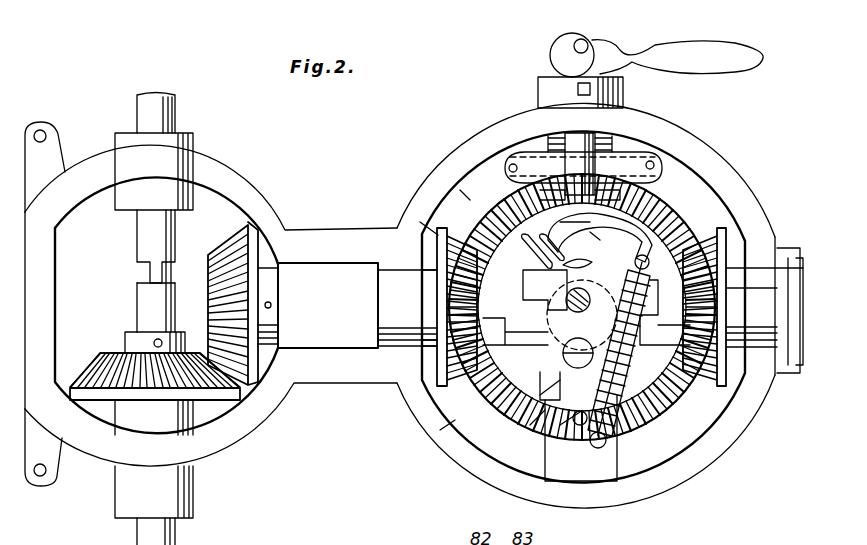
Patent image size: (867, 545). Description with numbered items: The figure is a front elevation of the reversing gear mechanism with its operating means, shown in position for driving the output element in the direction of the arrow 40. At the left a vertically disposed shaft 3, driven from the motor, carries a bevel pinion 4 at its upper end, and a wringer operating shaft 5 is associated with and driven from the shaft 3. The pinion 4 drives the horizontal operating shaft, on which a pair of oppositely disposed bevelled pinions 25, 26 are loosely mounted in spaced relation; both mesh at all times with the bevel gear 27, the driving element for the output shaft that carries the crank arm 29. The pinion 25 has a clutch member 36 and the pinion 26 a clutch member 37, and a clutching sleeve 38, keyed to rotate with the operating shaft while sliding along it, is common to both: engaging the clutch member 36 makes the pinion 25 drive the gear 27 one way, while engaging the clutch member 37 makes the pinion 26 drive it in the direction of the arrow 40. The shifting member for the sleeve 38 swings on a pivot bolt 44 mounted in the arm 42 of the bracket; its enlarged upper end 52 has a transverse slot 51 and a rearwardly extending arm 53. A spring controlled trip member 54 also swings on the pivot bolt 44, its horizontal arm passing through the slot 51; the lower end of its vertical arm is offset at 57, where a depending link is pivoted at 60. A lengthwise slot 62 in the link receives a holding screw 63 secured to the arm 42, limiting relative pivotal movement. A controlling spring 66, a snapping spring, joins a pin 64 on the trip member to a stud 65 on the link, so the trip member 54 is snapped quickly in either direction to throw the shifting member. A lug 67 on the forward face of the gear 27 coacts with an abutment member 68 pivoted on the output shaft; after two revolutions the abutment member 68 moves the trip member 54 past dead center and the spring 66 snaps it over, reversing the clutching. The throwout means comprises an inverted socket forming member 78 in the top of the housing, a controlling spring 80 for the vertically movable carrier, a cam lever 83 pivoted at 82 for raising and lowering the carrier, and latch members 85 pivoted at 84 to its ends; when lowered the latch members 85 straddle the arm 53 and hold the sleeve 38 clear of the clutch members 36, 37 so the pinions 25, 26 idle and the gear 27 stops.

The vertically disposed shaft 3 is at (145, 290).
The bevel pinion 4 is at (100, 355).
The wringer operating shaft 5 is at (147, 235).
The bevelled pinion 25 is at (438, 232).
The bevelled pinion 26 is at (722, 236).
The bevel gear 27 is at (455, 420).
The crank arm 29 is at (453, 305).
The clutch member 36 is at (560, 362).
The clutch member 37 is at (660, 345).
The clutching sleeve 38 is at (556, 325).
The arrow 40 is at (470, 198).
The arm 42 is at (560, 468).
The pivot bolt 44 is at (582, 324).
The transversely extending slot 51 is at (588, 222).
The enlarged upper end 52 is at (598, 240).
The rearwardly extending arm 53 is at (655, 190).
The spring controlled trip member 54 is at (700, 306).
The offset portion 57 is at (532, 424).
The pivotal connection 60 is at (572, 400).
The lengthwise extending slot 62 is at (548, 400).
The holding screw 63 is at (572, 424).
The stud or pin 64 is at (660, 225).
The stud 65 is at (612, 450).
The controlling spring 66 is at (676, 402).
The lug 67 is at (526, 259).
The abutment member 68 is at (578, 262).
The inverted socket forming member 78 is at (626, 95).
The controlling spring 80 is at (560, 165).
The pivotal connection 82 is at (582, 40).
The cam lever 83 is at (614, 44).
The pivotal connection 84 is at (645, 167).
The latch member 85 is at (602, 140).